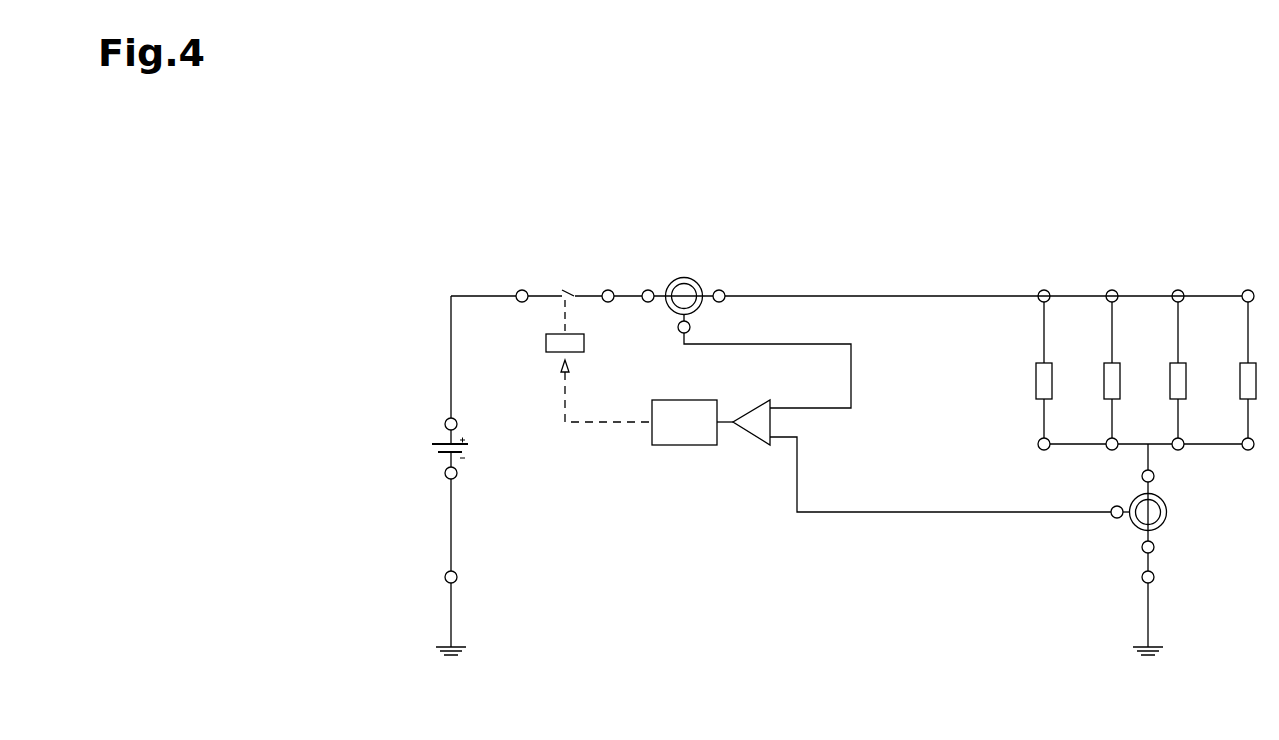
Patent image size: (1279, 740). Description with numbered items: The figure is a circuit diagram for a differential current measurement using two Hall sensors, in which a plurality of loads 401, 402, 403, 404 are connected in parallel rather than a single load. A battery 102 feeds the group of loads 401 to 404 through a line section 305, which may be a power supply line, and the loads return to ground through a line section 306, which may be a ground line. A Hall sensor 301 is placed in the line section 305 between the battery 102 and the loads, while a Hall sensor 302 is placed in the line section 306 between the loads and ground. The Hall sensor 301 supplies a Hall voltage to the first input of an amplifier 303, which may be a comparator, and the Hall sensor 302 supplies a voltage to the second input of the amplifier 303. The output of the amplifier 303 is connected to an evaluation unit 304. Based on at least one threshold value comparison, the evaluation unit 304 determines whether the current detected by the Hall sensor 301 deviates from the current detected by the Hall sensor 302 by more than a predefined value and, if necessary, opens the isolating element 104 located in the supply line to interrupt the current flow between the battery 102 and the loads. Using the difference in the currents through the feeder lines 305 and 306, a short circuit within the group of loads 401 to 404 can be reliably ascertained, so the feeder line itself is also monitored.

The battery 102 is at (425, 475).
The isolating element 104 is at (597, 335).
The Hall sensor 301 is at (757, 324).
The Hall sensor 302 is at (1165, 507).
The amplifier 303 is at (747, 437).
The evaluation unit 304 is at (665, 446).
The line section 305 is at (885, 292).
The line section 306 is at (1147, 563).
The load 401 is at (1026, 370).
The load 402 is at (1094, 370).
The load 403 is at (1161, 370).
The load 404 is at (1230, 370).